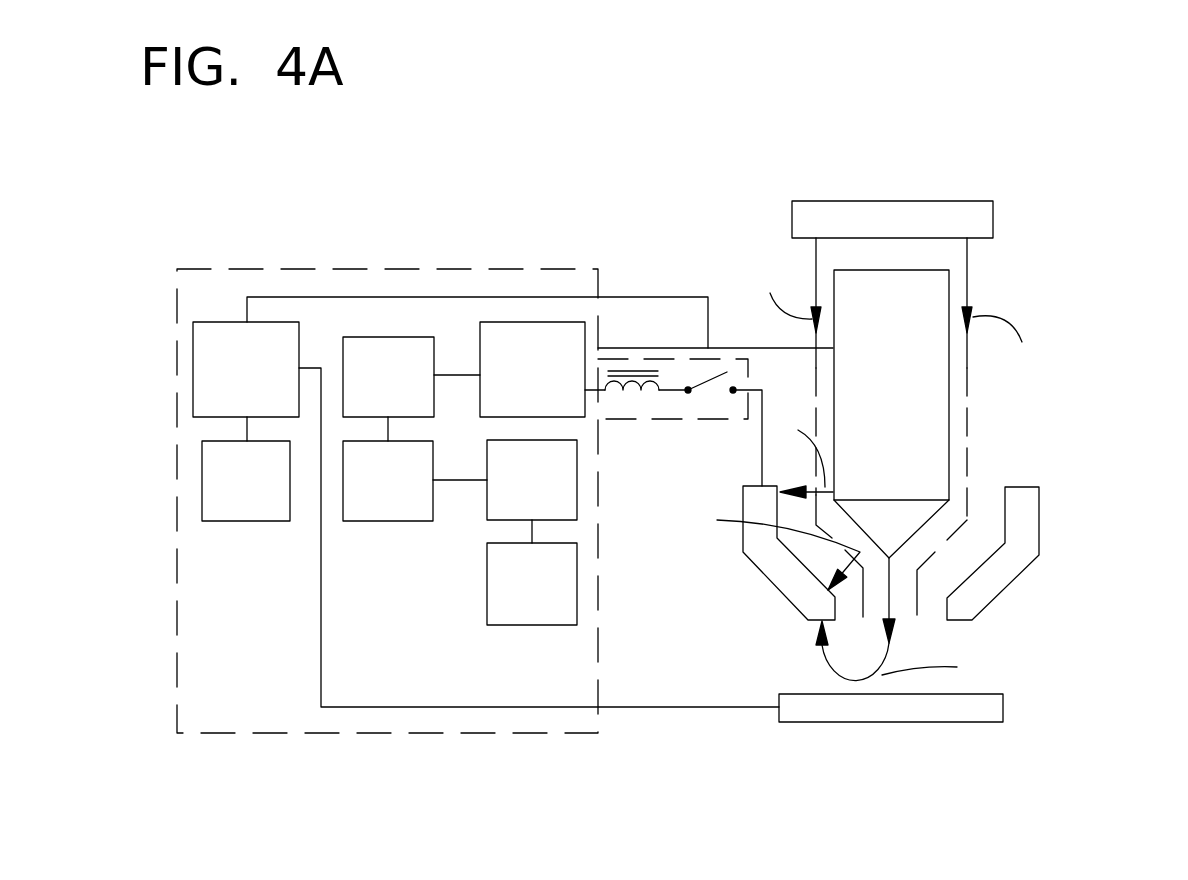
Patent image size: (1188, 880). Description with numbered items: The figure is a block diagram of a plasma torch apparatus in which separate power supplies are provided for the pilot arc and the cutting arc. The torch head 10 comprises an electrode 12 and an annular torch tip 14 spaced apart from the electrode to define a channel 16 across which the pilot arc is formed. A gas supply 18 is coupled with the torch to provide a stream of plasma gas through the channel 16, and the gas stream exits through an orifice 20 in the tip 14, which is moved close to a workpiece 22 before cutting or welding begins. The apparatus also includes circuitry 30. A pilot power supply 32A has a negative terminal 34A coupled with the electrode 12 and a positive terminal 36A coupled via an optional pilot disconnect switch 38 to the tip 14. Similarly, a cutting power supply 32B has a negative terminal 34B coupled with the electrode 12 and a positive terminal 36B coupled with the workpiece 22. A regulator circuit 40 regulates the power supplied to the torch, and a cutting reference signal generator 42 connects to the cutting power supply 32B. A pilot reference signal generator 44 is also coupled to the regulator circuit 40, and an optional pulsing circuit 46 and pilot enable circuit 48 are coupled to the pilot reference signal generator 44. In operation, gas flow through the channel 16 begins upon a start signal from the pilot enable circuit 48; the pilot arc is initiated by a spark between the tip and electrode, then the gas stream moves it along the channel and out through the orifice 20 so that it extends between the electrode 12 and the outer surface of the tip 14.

The torch head 10 is at (1062, 380).
The electrode 12 is at (950, 280).
The annular torch tip 14 is at (762, 573).
The channel 16 is at (807, 523).
The gas supply 18 is at (893, 200).
The orifice 20 is at (907, 617).
The workpiece 22 is at (930, 722).
The circuitry 30 is at (477, 737).
The pilot power supply 32A is at (502, 384).
The cutting power supply 32B is at (216, 384).
The negative terminal of the pilot power supply 34A is at (692, 346).
The negative terminal of the cutting power supply 34B is at (433, 296).
The positive terminal of the pilot power supply 36A is at (593, 390).
The positive terminal of the cutting power supply 36B is at (321, 564).
The pilot disconnect switch 38 is at (727, 370).
The regulator circuit 40 is at (368, 390).
The cutting reference signal generator 42 is at (226, 496).
The pilot reference signal generator 44 is at (368, 496).
The pulsing circuit 46 is at (512, 495).
The pilot enable circuit 48 is at (512, 598).